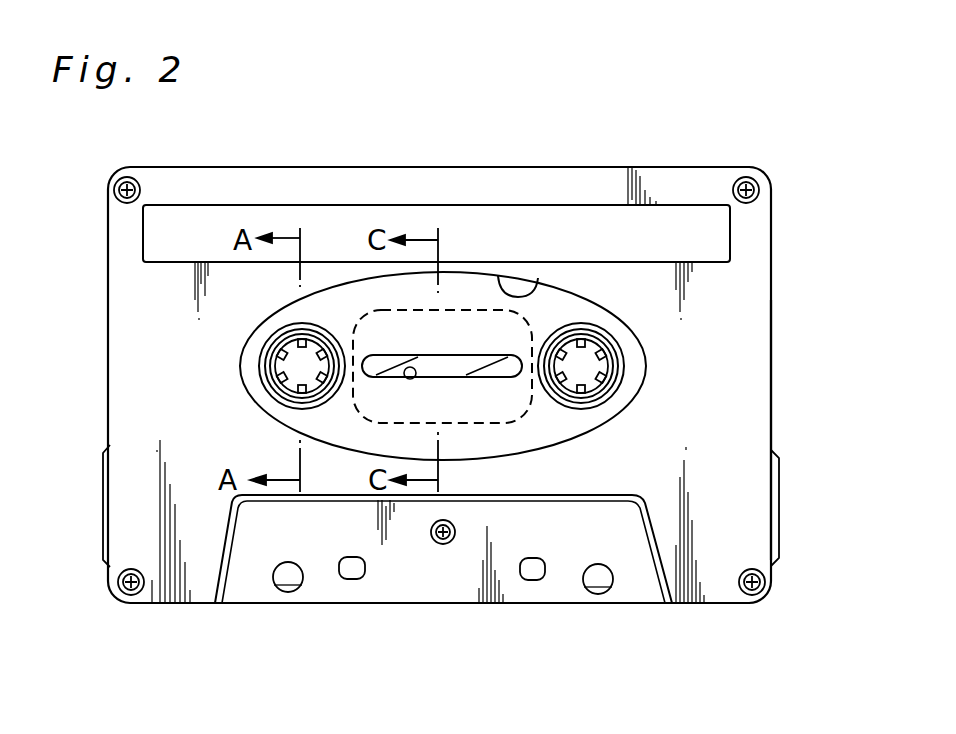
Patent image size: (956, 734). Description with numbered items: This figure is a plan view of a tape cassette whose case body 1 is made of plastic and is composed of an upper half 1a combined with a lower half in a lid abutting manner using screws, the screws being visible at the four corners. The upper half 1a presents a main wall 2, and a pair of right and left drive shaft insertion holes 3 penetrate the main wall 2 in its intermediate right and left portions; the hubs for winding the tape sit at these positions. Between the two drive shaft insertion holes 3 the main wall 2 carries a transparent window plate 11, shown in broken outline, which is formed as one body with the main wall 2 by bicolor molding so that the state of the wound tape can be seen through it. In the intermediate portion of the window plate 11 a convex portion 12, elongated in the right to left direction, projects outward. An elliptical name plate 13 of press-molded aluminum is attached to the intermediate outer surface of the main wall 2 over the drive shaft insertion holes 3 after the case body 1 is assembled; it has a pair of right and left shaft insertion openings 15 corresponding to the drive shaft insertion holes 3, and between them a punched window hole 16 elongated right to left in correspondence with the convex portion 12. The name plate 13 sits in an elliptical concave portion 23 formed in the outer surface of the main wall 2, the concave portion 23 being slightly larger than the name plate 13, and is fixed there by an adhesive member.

The case body 1 is at (771, 290).
The upper half 1a is at (707, 603).
The main wall 2 is at (752, 413).
The drive shaft insertion hole 3 is at (280, 383).
The transparent window plate 11 is at (507, 407).
The convex portion 12 is at (453, 360).
The name plate 13 is at (591, 418).
The shaft insertion opening 15 is at (265, 363).
The window hole 16 is at (412, 382).
The elliptical concave portion 23 is at (537, 288).